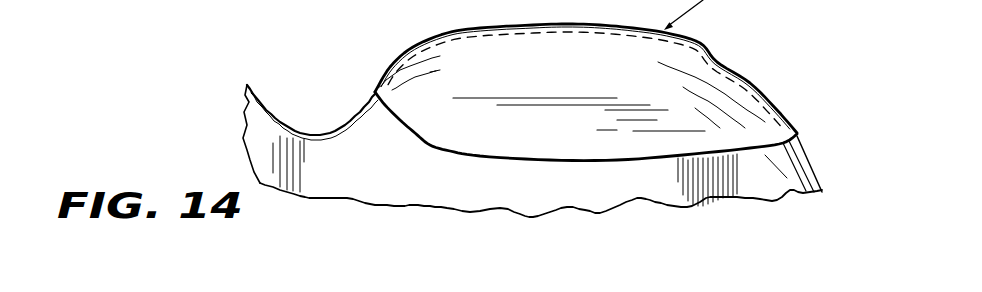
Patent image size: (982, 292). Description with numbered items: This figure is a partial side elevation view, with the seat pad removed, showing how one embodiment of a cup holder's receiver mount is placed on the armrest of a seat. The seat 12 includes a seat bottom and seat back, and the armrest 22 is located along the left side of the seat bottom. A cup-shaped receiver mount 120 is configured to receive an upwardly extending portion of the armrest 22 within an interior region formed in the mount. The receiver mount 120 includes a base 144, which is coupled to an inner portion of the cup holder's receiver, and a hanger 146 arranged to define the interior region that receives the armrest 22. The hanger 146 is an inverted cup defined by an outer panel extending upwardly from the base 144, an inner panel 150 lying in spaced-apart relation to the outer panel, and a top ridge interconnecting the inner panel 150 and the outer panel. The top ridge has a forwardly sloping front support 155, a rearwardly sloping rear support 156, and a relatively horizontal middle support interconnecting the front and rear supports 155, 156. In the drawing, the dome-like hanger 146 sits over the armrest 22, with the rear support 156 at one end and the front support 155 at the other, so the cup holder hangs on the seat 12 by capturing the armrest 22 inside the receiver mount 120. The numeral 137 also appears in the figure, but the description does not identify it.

The seat 12 is at (279, 94).
The armrest 22 is at (783, 167).
The cup-shaped receiver mount 120 is at (743, 52).
The apex 137 is at (563, 25).
The base 144 is at (549, 64).
The hanger 146 is at (813, 116).
The inner panel 150 is at (617, 88).
The forwardly sloping front support 155 is at (758, 87).
The rearwardly sloping rear support 156 is at (387, 72).